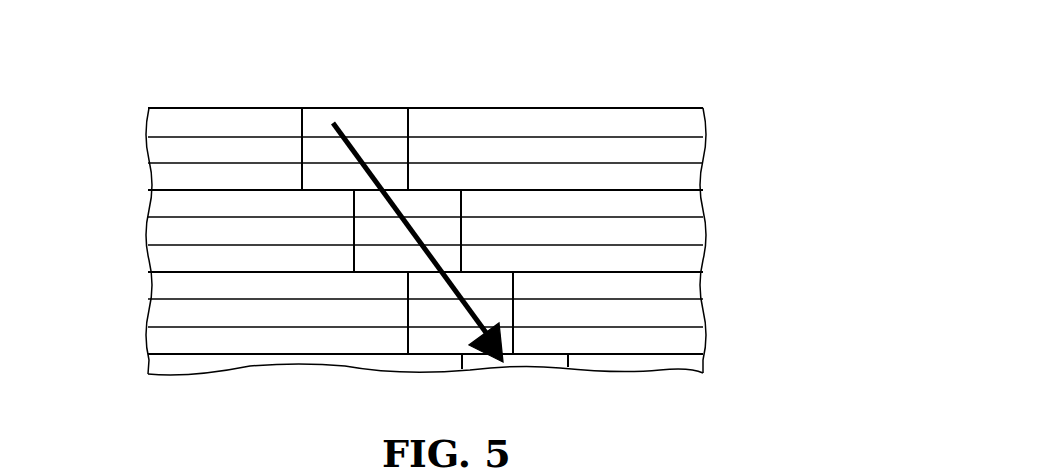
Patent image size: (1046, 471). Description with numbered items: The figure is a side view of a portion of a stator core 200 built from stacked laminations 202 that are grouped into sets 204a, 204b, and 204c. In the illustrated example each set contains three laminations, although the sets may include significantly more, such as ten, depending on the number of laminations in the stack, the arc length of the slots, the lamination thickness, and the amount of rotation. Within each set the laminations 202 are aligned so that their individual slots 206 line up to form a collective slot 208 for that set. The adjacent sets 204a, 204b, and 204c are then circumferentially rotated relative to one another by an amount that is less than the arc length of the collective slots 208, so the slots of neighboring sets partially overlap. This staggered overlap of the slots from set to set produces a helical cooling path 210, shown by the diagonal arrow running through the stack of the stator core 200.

The stator core 200 is at (700, 72).
The lamination 202 is at (503, 108).
The first set of laminations 204a is at (132, 109).
The second set of laminations 204b is at (110, 191).
The third set of laminations 204c is at (130, 273).
The slot 206 is at (395, 108).
The collective slot 208 is at (352, 105).
The helical cooling path 210 is at (463, 305).